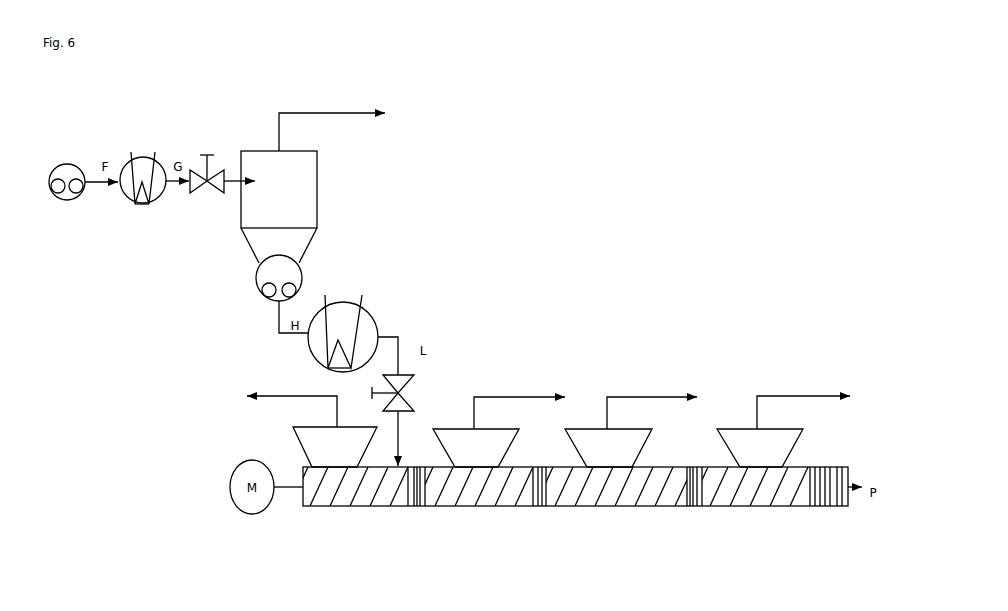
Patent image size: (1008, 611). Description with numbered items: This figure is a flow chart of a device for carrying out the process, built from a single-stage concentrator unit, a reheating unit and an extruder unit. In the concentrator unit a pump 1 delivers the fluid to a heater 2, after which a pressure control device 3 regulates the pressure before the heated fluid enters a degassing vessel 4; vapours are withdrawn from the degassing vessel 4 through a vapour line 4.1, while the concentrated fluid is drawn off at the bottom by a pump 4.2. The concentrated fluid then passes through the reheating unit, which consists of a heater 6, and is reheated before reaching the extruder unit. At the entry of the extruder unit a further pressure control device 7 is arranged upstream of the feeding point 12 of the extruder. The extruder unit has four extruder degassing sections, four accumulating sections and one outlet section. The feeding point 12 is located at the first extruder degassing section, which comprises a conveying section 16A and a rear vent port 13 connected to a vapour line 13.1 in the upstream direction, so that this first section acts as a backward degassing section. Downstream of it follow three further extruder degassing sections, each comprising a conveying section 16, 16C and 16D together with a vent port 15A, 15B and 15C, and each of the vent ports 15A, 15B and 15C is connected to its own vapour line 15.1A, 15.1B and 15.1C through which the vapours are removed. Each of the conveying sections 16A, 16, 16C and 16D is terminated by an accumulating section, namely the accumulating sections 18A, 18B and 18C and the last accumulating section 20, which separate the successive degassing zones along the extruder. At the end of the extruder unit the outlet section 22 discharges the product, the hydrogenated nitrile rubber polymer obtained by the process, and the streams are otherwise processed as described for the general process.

The pump 1 is at (67, 201).
The heater 2 is at (142, 204).
The pressure control device 3 is at (207, 190).
The degassing vessel 4 is at (321, 205).
The vapour line 4.1 is at (332, 124).
The pump 4.2 is at (254, 281).
The heater 6 is at (379, 318).
The pressure control device 7 is at (404, 393).
The feeding point 12 is at (392, 480).
The rear vent port 13 is at (320, 445).
The vapor line 13.1 is at (292, 404).
The vent port 15A is at (494, 447).
The vent port 15B is at (629, 447).
The vent port 15C is at (779, 447).
The vapour line 15.1A is at (519, 405).
The vapour line 15.1B is at (652, 405).
The vapour line 15.1C is at (803, 405).
The conveying section 16A is at (357, 492).
The conveying section 16 is at (499, 492).
The conveying section 16C is at (650, 492).
The conveying section 16D is at (777, 492).
The accumulating section 18A is at (416, 508).
The accumulating section 18B is at (541, 508).
The accumulating section 18C is at (695, 508).
The last accumulating section 20 is at (817, 508).
The outlet section 22 is at (839, 508).